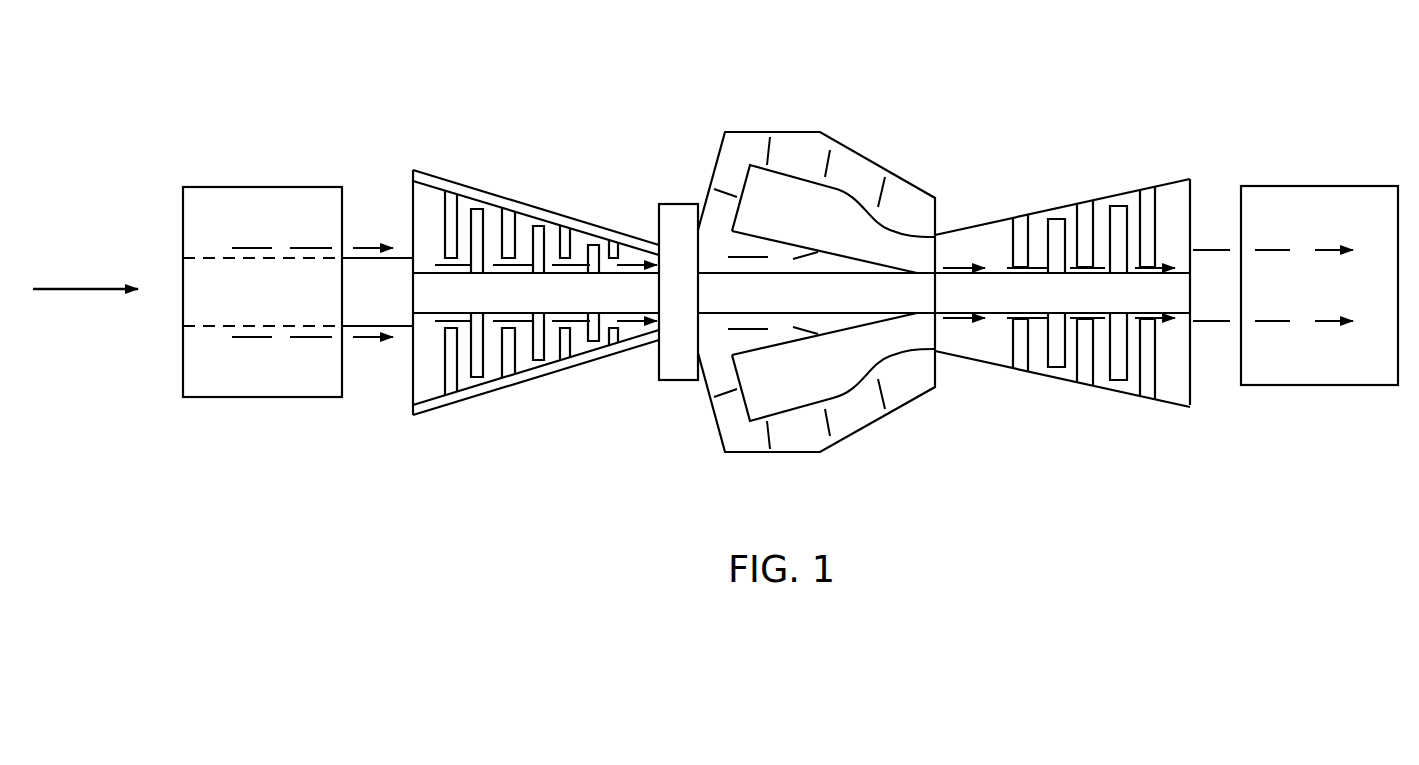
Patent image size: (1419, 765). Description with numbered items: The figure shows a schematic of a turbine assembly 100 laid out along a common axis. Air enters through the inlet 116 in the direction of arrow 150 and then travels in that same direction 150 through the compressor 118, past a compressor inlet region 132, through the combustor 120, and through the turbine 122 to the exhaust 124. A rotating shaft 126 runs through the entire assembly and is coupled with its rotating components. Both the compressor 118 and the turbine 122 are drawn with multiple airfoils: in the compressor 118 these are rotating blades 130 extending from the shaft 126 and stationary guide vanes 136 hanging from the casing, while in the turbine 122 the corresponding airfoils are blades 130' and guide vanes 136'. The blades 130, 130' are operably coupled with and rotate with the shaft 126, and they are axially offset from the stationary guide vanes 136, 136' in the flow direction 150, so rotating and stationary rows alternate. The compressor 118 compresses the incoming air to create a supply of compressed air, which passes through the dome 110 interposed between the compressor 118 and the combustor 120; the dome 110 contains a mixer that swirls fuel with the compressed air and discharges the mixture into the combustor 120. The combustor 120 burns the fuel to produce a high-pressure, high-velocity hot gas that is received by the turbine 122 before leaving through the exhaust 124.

The turbine assembly 100 is at (1042, 88).
The dome 110 is at (677, 203).
The inlet 116 is at (255, 186).
The compressor 118 is at (525, 198).
The combustor 120 is at (905, 170).
The turbine 122 is at (1055, 207).
The exhaust 124 is at (1320, 186).
The rotating shaft 126 is at (895, 304).
The blades 130 is at (546, 291).
The blades 130' is at (1091, 318).
The compressor inlet 132 is at (412, 202).
The guide vanes 136 is at (525, 293).
The guide vanes 136' is at (1102, 318).
The direction of air flow 150 is at (80, 287).